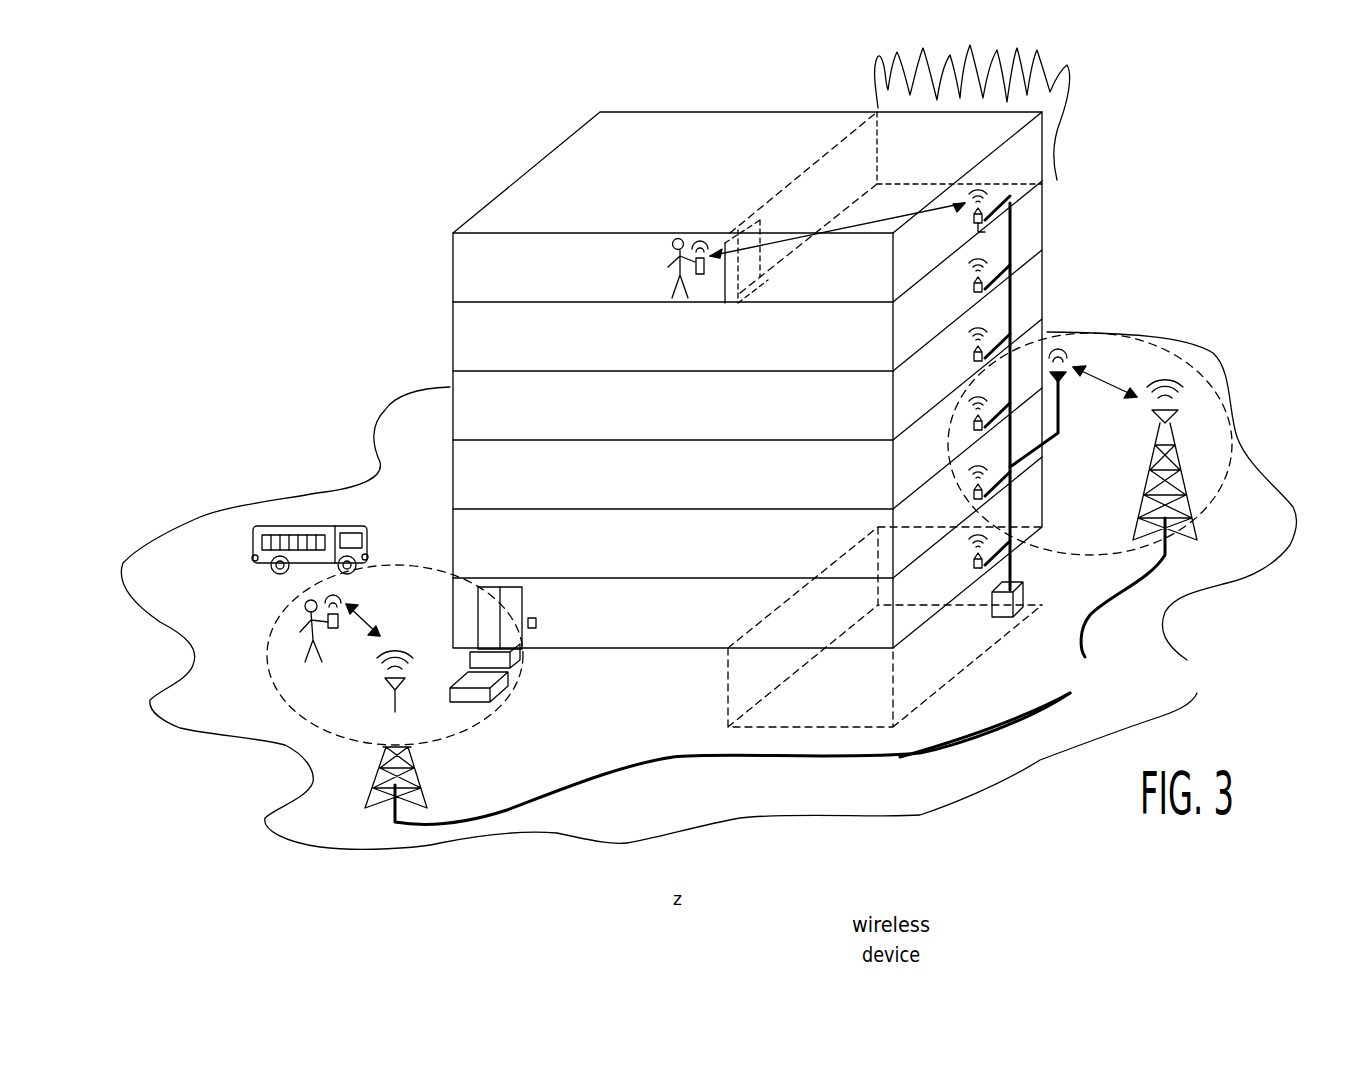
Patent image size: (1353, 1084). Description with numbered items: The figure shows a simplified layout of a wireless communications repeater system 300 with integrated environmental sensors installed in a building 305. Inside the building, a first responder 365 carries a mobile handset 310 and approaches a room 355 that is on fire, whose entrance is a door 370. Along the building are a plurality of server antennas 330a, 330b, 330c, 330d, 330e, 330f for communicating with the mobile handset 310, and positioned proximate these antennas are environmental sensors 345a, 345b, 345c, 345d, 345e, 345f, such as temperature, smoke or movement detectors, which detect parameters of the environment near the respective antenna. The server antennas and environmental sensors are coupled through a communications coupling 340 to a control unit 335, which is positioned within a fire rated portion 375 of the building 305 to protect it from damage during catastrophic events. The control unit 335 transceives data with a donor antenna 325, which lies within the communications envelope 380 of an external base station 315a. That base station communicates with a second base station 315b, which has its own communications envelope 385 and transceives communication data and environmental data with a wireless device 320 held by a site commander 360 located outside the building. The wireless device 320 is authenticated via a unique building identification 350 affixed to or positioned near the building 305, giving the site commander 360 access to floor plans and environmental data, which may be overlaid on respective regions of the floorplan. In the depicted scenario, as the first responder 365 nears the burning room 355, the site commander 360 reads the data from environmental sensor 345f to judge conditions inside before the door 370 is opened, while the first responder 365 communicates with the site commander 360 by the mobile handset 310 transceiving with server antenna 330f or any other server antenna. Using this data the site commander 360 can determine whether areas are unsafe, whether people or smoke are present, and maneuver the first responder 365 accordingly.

The wireless communications repeater system 300 is at (250, 162).
The building 305 is at (640, 112).
The mobile handset 310 is at (701, 282).
The base station 315a is at (1145, 492).
The base station 315b is at (427, 766).
The wireless device 320 is at (340, 630).
The donor antenna 325 is at (1067, 374).
The server antenna 330a is at (970, 553).
The server antenna 330b is at (962, 485).
The server antenna 330c is at (962, 410).
The server antenna 330d is at (972, 363).
The server antenna 330e is at (972, 296).
The server antenna 330f is at (958, 184).
The control unit 335 is at (1008, 619).
The communications coupling 340 is at (1020, 205).
The environmental sensor 345a is at (975, 572).
The environmental sensor 345b is at (965, 500).
The environmental sensor 345c is at (965, 432).
The environmental sensor 345d is at (1000, 335).
The environmental sensor 345e is at (1000, 268).
The environmental sensor 345f is at (968, 226).
The unique building identification 350 is at (537, 623).
The room 355 is at (910, 128).
The site commander 360 is at (300, 612).
The first responder 365 is at (672, 262).
The door 370 is at (742, 232).
The fire rated portion 375 is at (728, 703).
The communications envelope 380 is at (1210, 500).
The communications envelope 385 is at (268, 692).